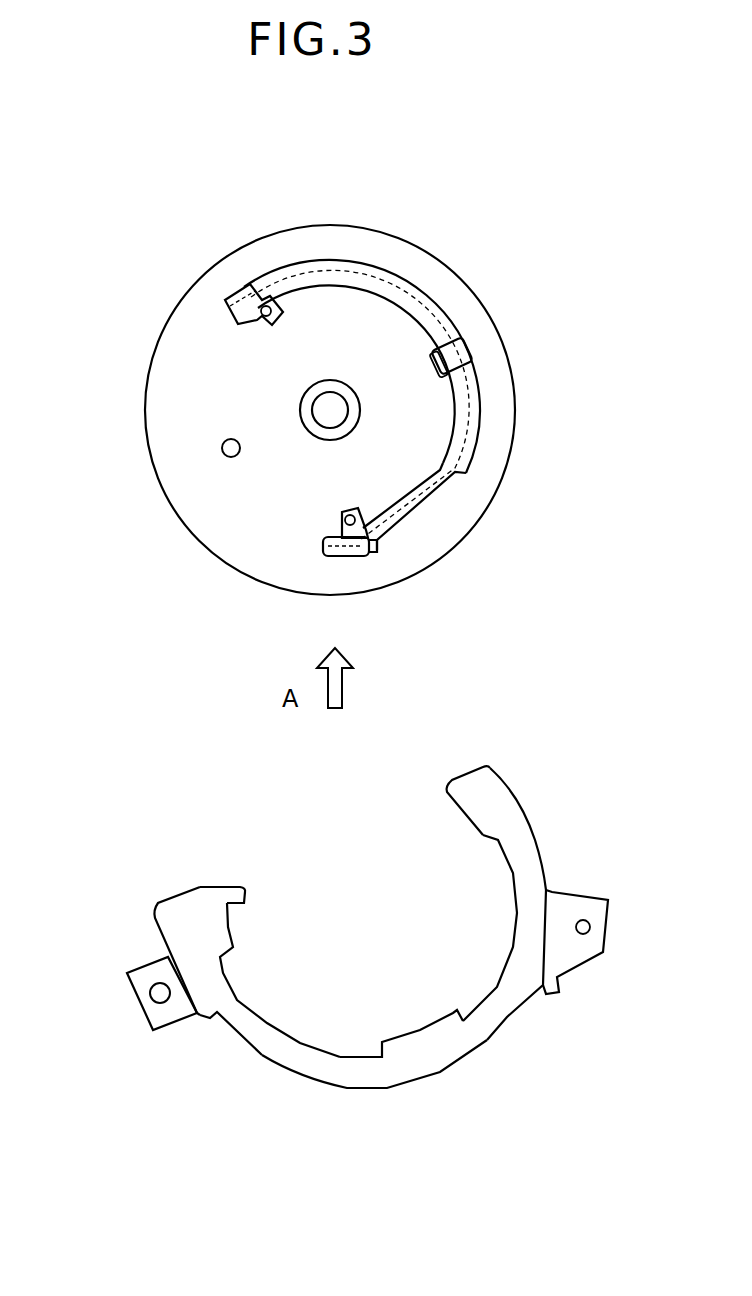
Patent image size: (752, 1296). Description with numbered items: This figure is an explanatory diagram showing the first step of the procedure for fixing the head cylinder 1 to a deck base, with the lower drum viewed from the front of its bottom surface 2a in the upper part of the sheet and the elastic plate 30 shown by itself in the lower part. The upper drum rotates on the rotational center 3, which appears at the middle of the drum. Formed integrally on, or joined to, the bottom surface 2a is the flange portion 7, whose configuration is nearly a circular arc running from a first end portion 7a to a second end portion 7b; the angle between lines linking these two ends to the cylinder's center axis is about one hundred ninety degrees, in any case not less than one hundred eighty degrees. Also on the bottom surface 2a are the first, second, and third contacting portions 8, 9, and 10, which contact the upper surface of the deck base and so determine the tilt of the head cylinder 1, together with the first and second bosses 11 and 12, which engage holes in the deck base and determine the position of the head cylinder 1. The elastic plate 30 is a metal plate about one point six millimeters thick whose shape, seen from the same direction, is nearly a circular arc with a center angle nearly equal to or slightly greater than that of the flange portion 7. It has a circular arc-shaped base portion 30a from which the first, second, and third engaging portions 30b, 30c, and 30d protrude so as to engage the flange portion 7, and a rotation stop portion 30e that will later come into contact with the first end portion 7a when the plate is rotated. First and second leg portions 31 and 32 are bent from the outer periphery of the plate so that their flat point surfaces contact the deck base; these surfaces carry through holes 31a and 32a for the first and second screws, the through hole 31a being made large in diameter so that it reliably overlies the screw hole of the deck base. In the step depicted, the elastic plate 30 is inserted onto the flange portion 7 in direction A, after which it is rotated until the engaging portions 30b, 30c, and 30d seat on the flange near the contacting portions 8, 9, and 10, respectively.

The head cylinder 1 is at (204, 566).
The bottom surface 2a is at (187, 493).
The rotational center 3 is at (302, 408).
The flange portion 7 is at (450, 317).
The first end portion 7a is at (322, 548).
The second end portion 7b is at (236, 312).
The first contacting portion 8 is at (344, 557).
The second contacting portion 9 is at (236, 305).
The third contacting portion 10 is at (466, 364).
The first boss 11 is at (354, 516).
The second boss 12 is at (270, 317).
The elastic plate 30 is at (527, 800).
The base portion 30a is at (307, 1068).
The first engaging portion 30b is at (215, 930).
The second engaging portion 30c is at (475, 806).
The third engaging portion 30d is at (414, 1043).
The rotation stop portion 30e is at (235, 893).
The first leg portion 31 is at (157, 1020).
The through hole 31a is at (155, 995).
The second leg portion 32 is at (600, 908).
The through hole 32a is at (588, 922).